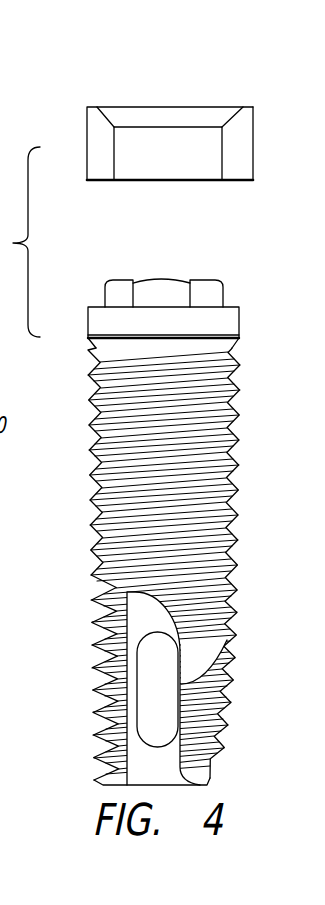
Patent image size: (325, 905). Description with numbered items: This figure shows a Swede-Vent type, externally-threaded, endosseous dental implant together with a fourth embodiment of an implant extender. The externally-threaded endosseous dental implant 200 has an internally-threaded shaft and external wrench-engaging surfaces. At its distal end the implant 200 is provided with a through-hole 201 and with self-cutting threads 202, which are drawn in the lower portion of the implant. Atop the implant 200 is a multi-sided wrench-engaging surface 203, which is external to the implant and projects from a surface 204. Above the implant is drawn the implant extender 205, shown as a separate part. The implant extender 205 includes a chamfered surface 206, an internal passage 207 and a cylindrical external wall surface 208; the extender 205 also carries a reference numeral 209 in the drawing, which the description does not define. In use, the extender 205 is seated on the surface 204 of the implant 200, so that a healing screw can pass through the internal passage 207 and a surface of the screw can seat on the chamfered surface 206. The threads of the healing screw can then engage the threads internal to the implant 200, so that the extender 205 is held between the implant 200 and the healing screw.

The externally-threaded endosseous dental implant 200 is at (237, 493).
The through-hole 201 is at (180, 688).
The self-cutting threads 202 is at (97, 675).
The multi-sided wrench-engaging surface 203 is at (208, 292).
The surface 204 is at (232, 292).
The implant extender 205 is at (253, 120).
The chamfered surface 206 is at (230, 119).
The internal passage 207 is at (140, 138).
The cylindrical external wall surface 208 is at (87, 142).
The lock block bottom surface 209 is at (233, 181).